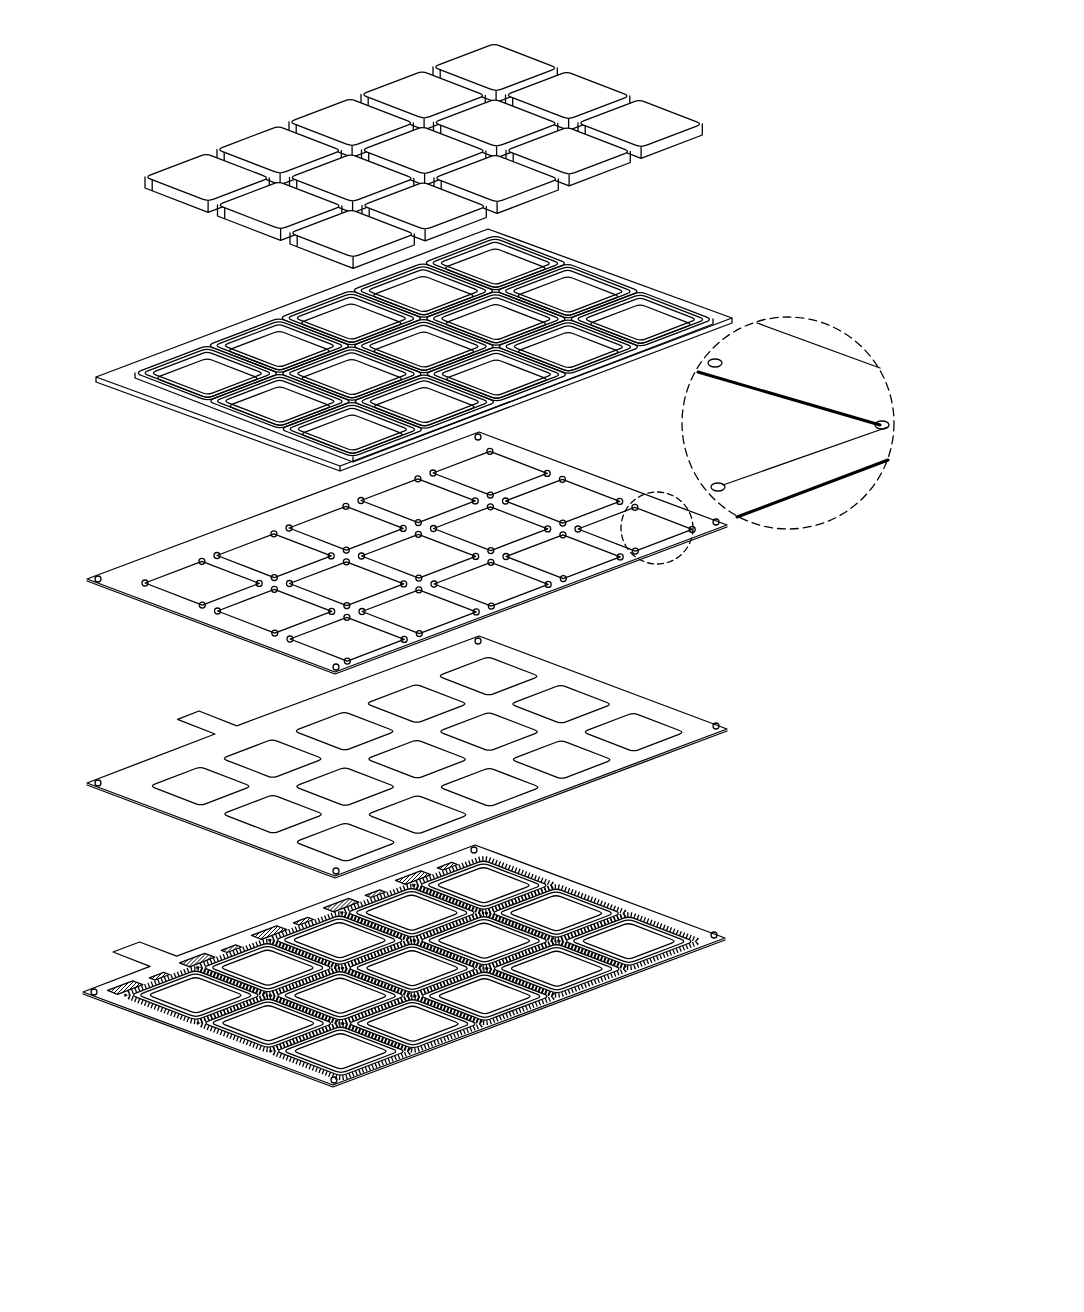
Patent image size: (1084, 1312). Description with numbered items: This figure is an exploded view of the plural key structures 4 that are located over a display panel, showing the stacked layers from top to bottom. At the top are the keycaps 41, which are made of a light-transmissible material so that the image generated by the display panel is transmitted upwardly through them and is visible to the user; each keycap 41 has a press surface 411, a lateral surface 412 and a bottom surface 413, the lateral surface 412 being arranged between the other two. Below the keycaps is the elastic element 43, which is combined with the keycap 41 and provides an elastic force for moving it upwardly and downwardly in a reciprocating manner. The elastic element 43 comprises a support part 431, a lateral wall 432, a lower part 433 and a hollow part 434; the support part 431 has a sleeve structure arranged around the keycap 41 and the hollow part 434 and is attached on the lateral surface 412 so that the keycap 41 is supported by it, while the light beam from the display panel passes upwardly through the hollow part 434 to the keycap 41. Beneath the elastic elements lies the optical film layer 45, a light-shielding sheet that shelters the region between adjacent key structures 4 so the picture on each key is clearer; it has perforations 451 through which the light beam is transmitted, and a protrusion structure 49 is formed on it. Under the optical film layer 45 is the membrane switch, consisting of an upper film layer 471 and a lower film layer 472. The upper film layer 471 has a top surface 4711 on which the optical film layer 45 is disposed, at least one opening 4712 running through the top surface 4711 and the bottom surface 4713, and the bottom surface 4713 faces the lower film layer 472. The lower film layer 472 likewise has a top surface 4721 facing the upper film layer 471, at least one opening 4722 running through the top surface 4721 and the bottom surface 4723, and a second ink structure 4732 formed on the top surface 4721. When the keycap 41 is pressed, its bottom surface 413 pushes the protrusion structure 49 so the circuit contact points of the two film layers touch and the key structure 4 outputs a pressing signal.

The key structure 4 is at (169, 60).
The keycap 41 is at (826, 30).
The press surface 411 is at (502, 65).
The lateral surface 412 is at (673, 137).
The bottom surface 413 is at (668, 153).
The elastic element 43 is at (826, 147).
The support part 431 is at (192, 345).
The lateral wall 432 is at (158, 385).
The lower part 433 is at (223, 417).
The hollow part 434 is at (182, 377).
The optical film layer 45 is at (509, 495).
The perforation 451 is at (193, 583).
The protrusion structure 49 is at (893, 428).
The upper film layer 471 is at (409, 757).
The top surface 4711 is at (600, 690).
The opening 4712 is at (647, 728).
The bottom surface 4713 is at (188, 825).
The lower film layer 472 is at (416, 956).
The top surface 4721 is at (542, 868).
The opening 4722 is at (648, 938).
The second ink structure 4732 is at (598, 900).
The bottom surface 4723 is at (210, 1040).